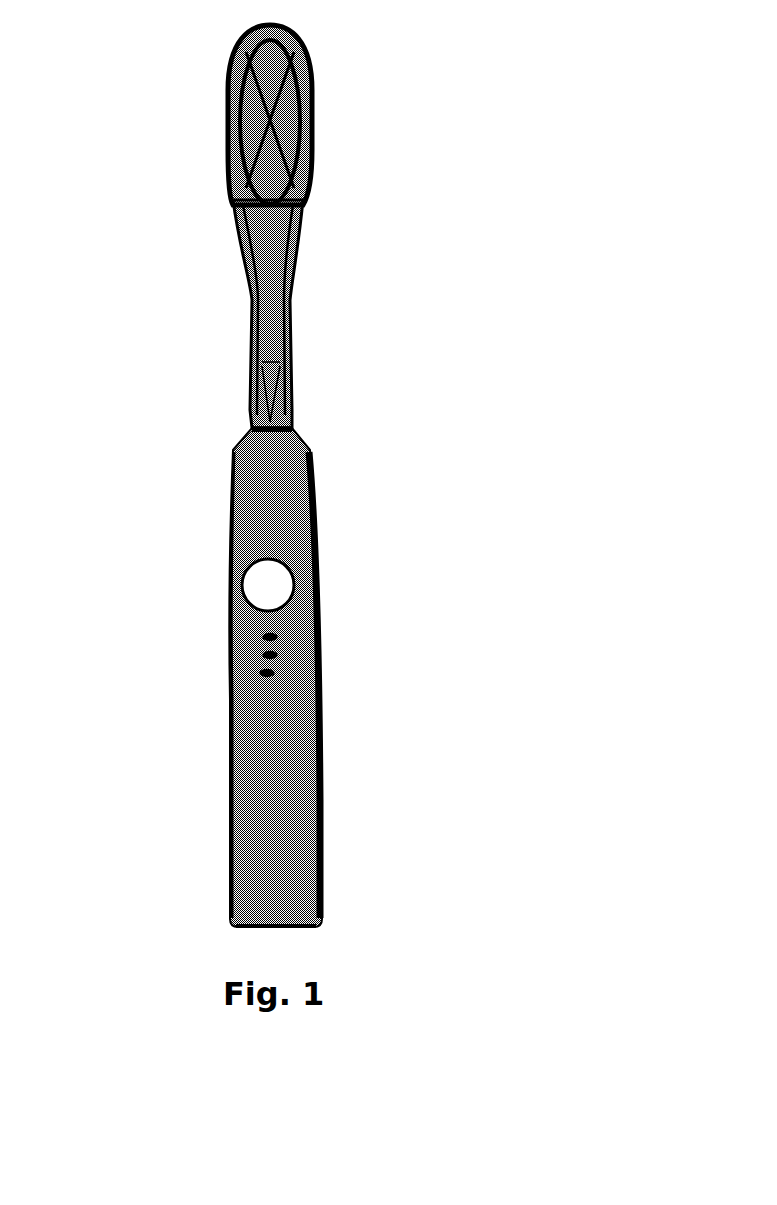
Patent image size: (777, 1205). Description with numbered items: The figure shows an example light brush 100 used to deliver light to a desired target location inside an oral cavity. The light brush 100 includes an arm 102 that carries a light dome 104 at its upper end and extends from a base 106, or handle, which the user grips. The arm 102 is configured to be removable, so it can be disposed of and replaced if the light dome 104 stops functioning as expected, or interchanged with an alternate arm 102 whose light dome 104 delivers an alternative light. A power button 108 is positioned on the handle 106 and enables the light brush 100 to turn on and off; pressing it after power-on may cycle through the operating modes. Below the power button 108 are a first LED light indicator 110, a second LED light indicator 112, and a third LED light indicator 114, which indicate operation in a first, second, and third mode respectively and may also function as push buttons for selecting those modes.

The light brush 100 is at (321, 476).
The arm 102 is at (293, 248).
The light dome 104 is at (250, 113).
The base 106 is at (323, 777).
The power button 108 is at (248, 586).
The first LED light indicator 110 is at (270, 637).
The second LED light indicator 112 is at (270, 655).
The third LED light indicator 114 is at (267, 673).